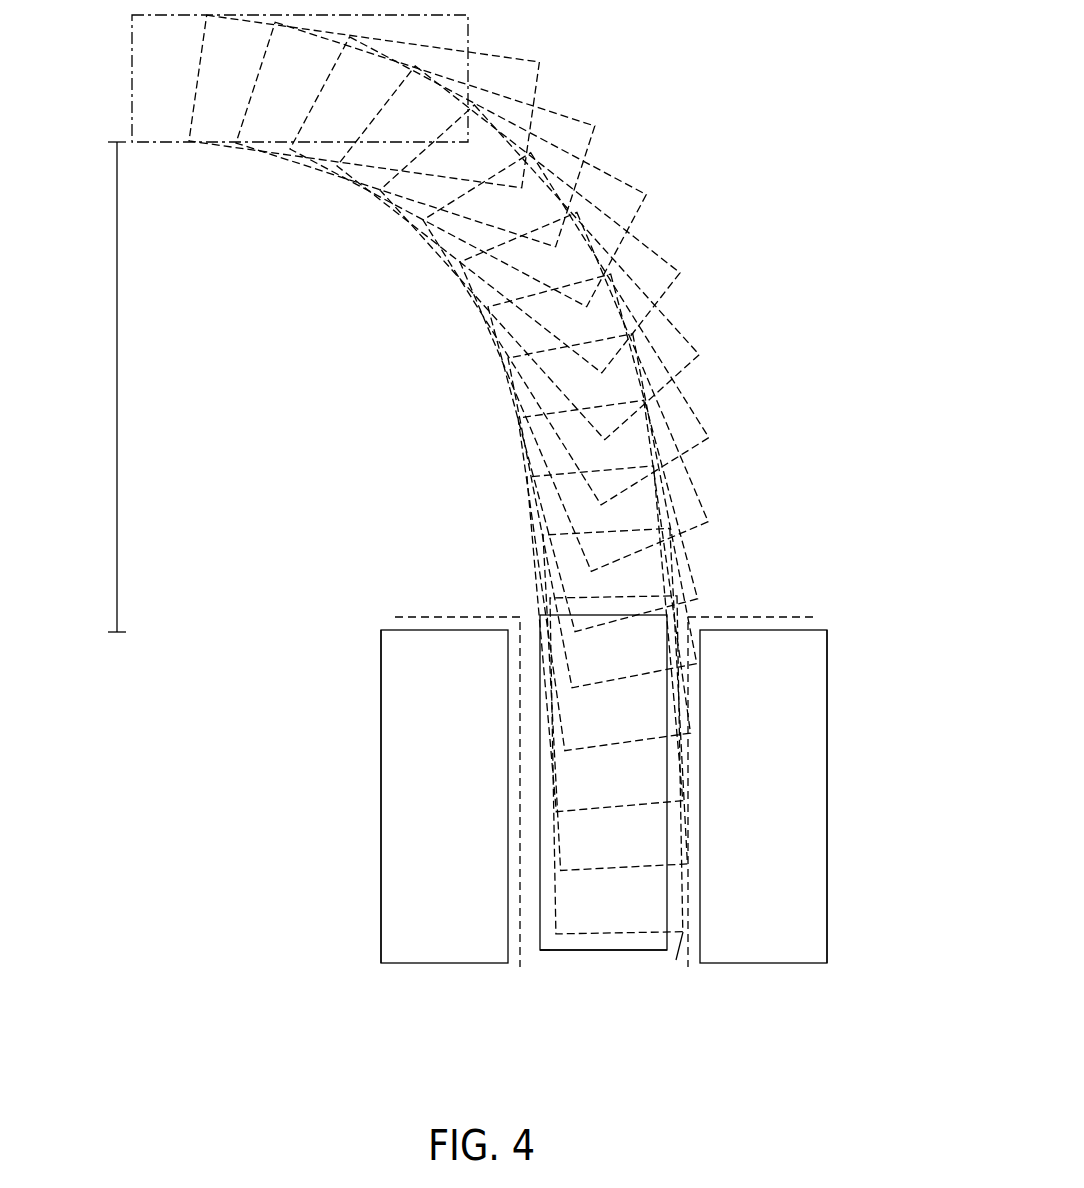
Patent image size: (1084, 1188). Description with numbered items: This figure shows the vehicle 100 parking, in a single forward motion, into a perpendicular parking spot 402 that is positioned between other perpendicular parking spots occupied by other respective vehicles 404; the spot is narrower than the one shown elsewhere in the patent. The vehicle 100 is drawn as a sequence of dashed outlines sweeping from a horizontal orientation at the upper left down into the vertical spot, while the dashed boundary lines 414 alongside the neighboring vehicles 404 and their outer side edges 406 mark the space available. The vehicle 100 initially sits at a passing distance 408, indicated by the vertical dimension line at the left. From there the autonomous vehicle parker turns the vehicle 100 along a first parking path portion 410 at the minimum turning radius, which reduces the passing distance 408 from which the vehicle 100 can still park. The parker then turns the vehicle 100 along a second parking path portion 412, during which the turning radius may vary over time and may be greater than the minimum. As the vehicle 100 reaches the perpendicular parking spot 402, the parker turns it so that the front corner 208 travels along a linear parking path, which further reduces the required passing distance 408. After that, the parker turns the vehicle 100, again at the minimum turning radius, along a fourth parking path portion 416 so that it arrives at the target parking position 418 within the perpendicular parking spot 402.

The vehicle 100 is at (604, 90).
The front corner 208 is at (655, 962).
The perpendicular parking spot 402 is at (601, 990).
The other respective vehicles 404 is at (438, 990).
The outer side walls of guide blocks 406 is at (381, 798).
The passing distance 408 is at (117, 385).
The first parking path portion 410 is at (380, 234).
The second parking path portion 412 is at (498, 486).
The slot entrance boundary 414 is at (692, 604).
The fourth parking path portion 416 is at (680, 966).
The target parking position 418 is at (557, 960).